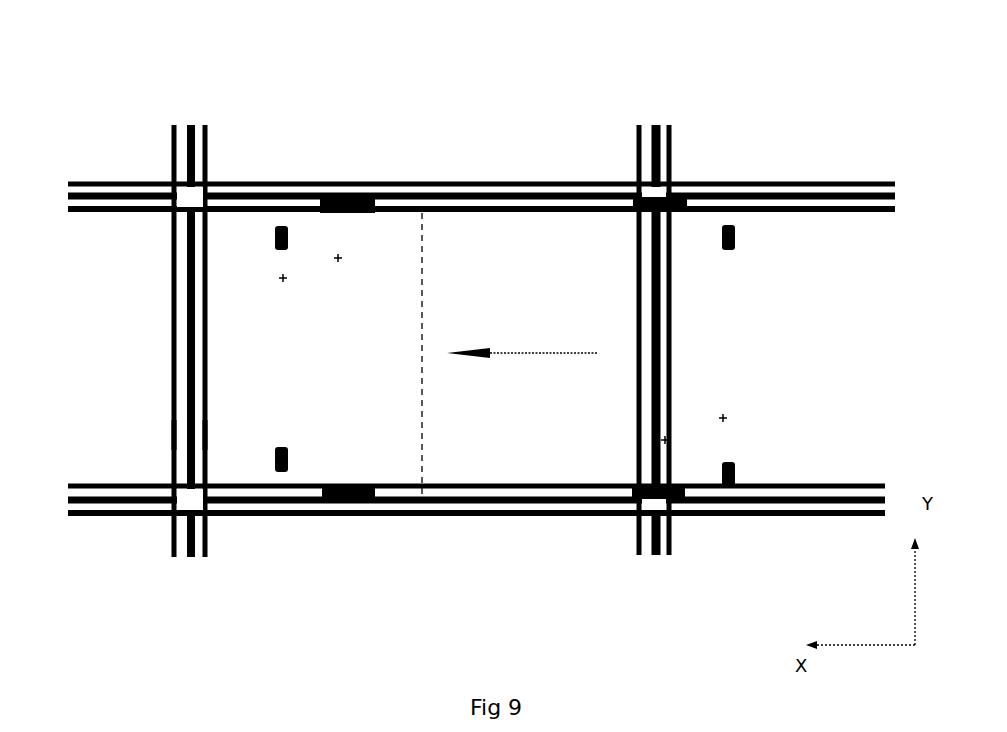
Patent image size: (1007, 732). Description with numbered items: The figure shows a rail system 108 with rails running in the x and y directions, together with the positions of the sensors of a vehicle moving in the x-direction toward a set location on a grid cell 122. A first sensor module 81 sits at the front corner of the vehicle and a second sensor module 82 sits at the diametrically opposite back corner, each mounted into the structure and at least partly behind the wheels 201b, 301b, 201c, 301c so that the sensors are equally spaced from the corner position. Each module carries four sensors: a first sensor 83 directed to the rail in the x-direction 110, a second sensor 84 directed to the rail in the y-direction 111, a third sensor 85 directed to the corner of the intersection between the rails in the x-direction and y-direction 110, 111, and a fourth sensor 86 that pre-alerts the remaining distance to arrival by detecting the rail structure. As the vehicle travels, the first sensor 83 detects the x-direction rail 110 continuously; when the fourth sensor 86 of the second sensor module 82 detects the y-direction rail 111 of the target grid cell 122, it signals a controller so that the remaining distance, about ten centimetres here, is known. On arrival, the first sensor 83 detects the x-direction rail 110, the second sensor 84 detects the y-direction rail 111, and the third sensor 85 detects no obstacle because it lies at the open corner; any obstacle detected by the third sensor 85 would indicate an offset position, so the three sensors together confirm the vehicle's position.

The first sensor module 81 is at (208, 118).
The second sensor module 82 is at (763, 438).
The first sensor 83 is at (303, 211).
The second sensor 84 is at (283, 280).
The third sensor 85 is at (512, 367).
The fourth sensor 86 is at (333, 258).
The rail system 108 is at (486, 352).
The rail in the x-direction 110 is at (412, 183).
The rail in the y-direction 111 is at (502, 280).
The grid cell 122 is at (222, 432).
The wheel 201c is at (730, 235).
The wheel 301c is at (813, 146).
The wheel 201b is at (333, 495).
The wheel 301b is at (427, 580).